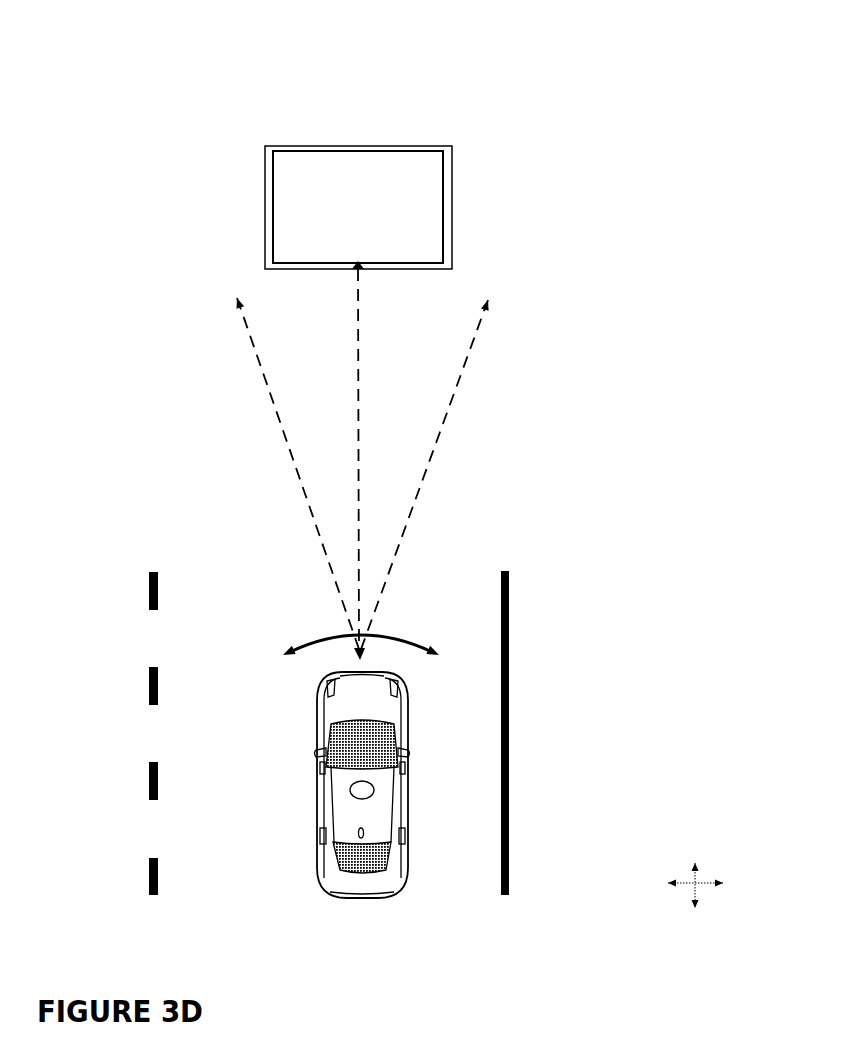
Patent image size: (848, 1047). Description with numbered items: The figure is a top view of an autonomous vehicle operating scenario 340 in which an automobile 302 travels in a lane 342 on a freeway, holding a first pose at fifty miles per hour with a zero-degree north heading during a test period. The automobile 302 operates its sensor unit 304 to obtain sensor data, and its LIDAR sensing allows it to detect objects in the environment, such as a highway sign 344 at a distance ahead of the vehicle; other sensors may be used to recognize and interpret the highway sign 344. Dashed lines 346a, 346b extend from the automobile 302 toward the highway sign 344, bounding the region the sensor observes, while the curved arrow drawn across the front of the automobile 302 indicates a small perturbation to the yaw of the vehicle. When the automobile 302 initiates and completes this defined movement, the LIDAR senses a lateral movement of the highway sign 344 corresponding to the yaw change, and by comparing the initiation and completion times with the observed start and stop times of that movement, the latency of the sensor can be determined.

The scenario 340 is at (58, 74).
The lane 342 is at (465, 513).
The highway sign 344 is at (388, 275).
The camera field of view boundary (left) 346a is at (276, 469).
The camera field of view boundary (right) 346b is at (449, 469).
The automobile 302 is at (317, 710).
The sensor unit 304 is at (360, 798).